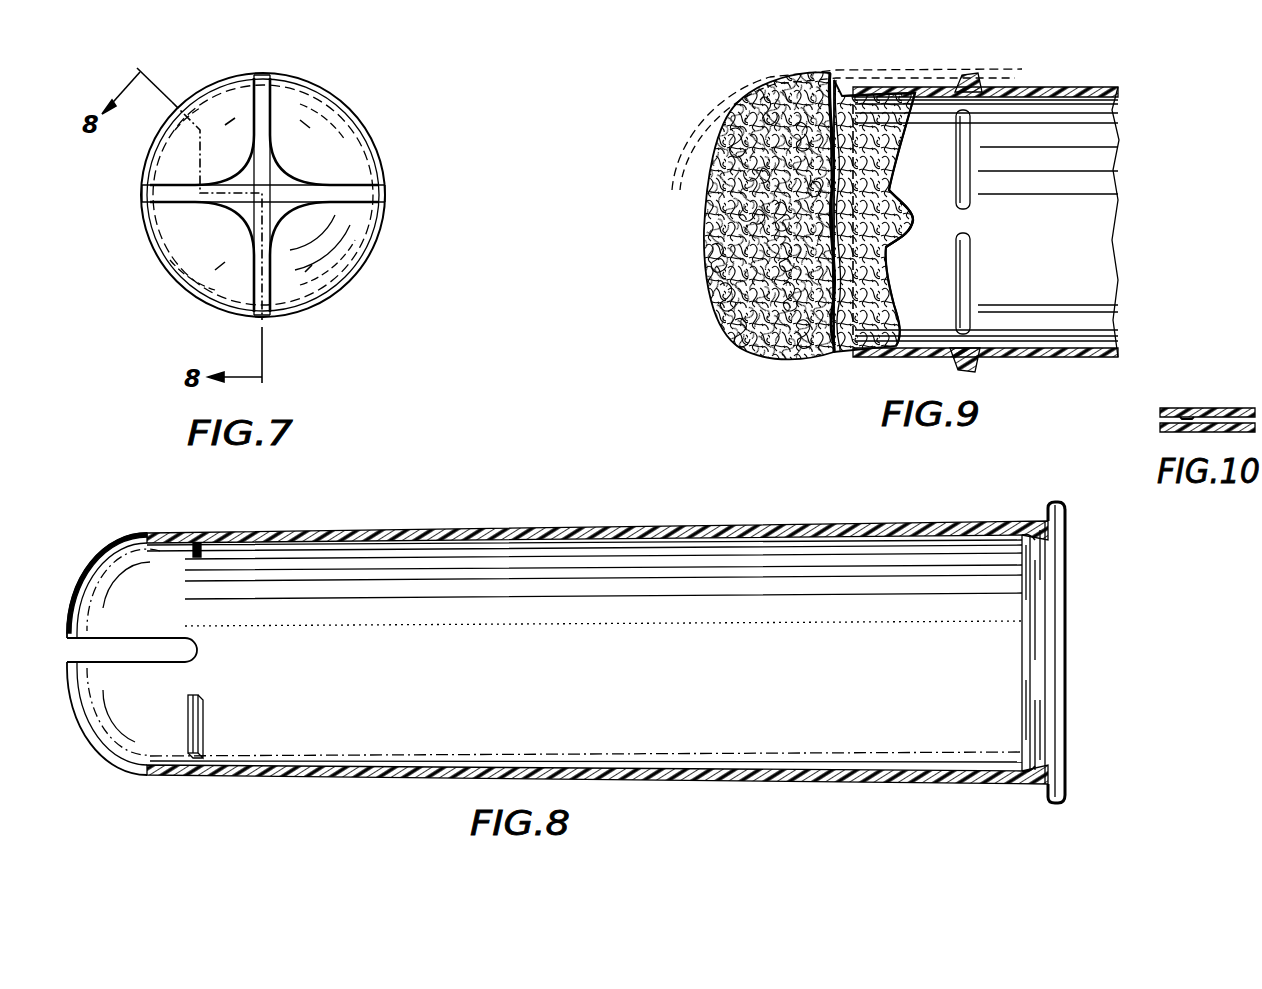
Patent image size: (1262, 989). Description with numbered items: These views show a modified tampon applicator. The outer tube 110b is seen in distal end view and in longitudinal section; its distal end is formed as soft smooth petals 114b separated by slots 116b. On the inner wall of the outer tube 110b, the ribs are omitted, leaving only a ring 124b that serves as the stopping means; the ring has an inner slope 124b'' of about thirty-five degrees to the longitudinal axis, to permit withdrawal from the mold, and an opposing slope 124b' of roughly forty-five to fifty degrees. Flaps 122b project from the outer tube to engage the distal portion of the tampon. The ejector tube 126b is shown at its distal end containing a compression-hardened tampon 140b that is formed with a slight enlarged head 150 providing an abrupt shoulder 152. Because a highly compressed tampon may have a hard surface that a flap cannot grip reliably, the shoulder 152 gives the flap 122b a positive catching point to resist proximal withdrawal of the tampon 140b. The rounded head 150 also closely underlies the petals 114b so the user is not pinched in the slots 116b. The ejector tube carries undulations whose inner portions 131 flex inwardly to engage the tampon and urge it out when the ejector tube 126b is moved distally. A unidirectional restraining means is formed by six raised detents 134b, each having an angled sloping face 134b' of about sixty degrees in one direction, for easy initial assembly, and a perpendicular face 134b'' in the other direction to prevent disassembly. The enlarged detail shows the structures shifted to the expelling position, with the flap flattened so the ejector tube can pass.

In FIG. 7, the outer tube 110b is at (142, 222).
In FIG. 9, the outer tube 110b is at (946, 72).
In FIG. 10, the outer tube 110b is at (1242, 410).
In FIG. 8, the outer tube 110b is at (628, 523).
In FIG. 7, the petals 114b is at (233, 241).
In FIG. 9, the petals 114b is at (699, 135).
In FIG. 8, the petals 114b is at (84, 575).
In FIG. 7, the slots 116b is at (165, 186).
In FIG. 8, the slots 116b is at (123, 660).
In FIG. 7, the flap 122b is at (327, 147).
In FIG. 9, the flap 122b is at (870, 70).
In FIG. 10, the flap 122b is at (1187, 417).
In FIG. 8, the flap 122b is at (195, 553).
In FIG. 8, the ring 124b is at (1070, 653).
In FIG. 8, the opposing slope 124b' is at (1090, 652).
In FIG. 8, the inner slope 124b'' is at (976, 653).
In FIG. 9, the ejector tube 126b is at (1090, 73).
In FIG. 10, the ejector tube 126b is at (1160, 430).
In FIG. 9, the inner portions of the undulations 131 is at (896, 223).
In FIG. 9, the raised detents 134b is at (995, 222).
In FIG. 9, the angled sloping face 134b' is at (943, 228).
In FIG. 9, the perpendicular face 134b'' is at (1006, 370).
In FIG. 9, the tampon 140b is at (888, 295).
In FIG. 9, the head 150 is at (743, 99).
In FIG. 9, the shoulder 152 is at (838, 82).